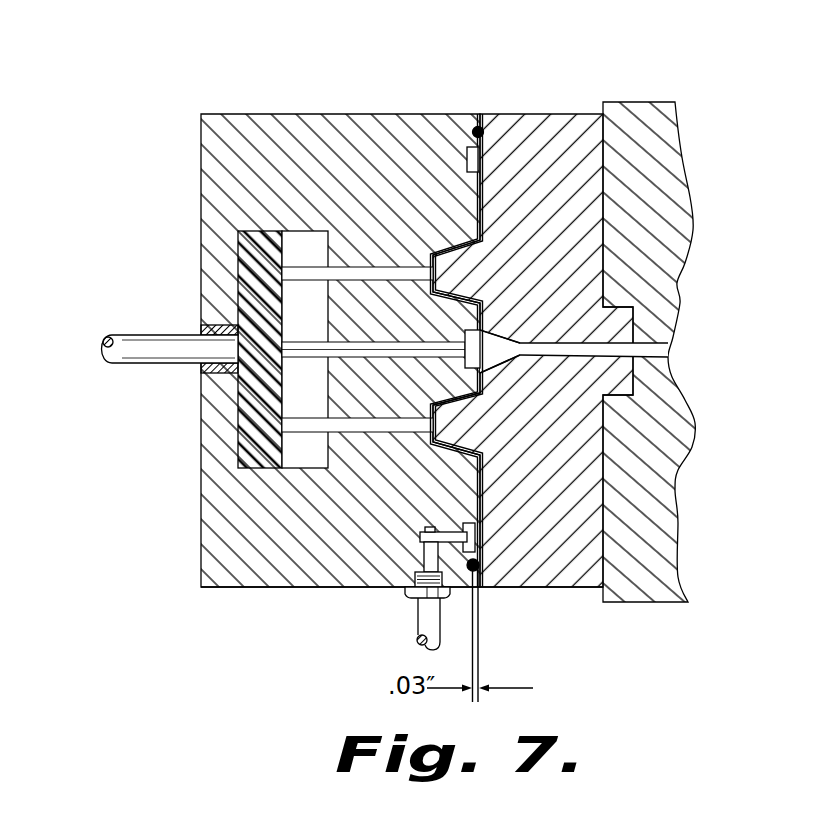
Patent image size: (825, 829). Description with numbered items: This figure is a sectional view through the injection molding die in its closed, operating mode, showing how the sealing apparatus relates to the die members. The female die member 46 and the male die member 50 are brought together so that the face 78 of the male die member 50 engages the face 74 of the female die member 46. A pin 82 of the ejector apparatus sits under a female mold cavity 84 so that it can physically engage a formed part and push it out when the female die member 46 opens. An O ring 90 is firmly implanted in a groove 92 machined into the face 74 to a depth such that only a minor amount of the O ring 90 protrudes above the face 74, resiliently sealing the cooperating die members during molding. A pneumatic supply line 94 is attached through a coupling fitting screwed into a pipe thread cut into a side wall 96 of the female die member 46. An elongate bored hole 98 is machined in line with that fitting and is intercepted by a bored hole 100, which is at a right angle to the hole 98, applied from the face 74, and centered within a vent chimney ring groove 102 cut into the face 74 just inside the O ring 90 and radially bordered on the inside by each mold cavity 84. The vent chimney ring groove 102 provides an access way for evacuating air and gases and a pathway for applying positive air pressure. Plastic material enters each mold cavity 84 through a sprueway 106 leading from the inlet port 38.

The inlet port 38 is at (645, 348).
The female die member 46 is at (262, 125).
The male die member 50 is at (590, 110).
The face 74 is at (479, 128).
The face 78 is at (487, 172).
The pin 82 is at (292, 257).
The female mold cavity 84 is at (430, 250).
The O ring 90 is at (480, 567).
The groove 92 is at (477, 128).
The pneumatic supply line 94 is at (417, 643).
The side wall 96 is at (245, 587).
The elongate bored hole 98 is at (424, 555).
The bored hole 100 is at (455, 528).
The vent chimney ring groove 102 is at (468, 147).
The sprueway 106 is at (477, 378).